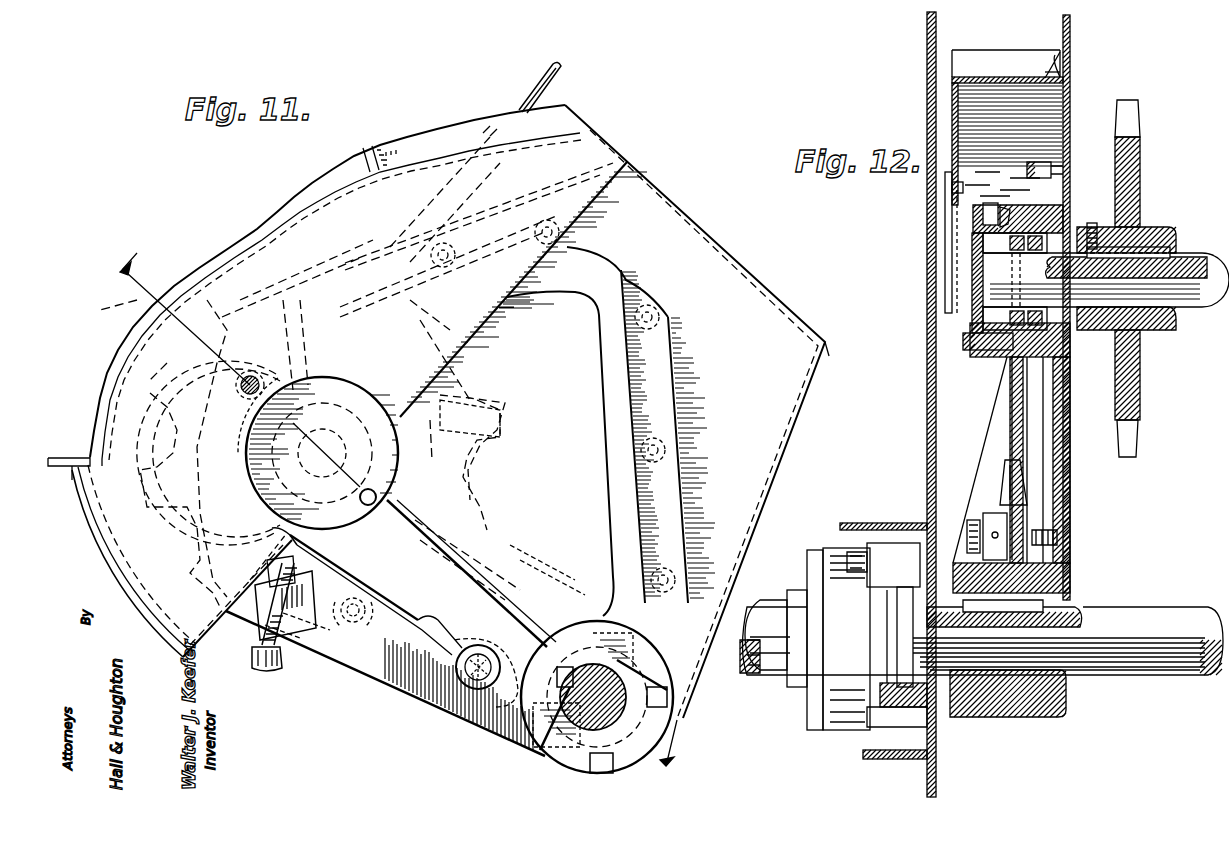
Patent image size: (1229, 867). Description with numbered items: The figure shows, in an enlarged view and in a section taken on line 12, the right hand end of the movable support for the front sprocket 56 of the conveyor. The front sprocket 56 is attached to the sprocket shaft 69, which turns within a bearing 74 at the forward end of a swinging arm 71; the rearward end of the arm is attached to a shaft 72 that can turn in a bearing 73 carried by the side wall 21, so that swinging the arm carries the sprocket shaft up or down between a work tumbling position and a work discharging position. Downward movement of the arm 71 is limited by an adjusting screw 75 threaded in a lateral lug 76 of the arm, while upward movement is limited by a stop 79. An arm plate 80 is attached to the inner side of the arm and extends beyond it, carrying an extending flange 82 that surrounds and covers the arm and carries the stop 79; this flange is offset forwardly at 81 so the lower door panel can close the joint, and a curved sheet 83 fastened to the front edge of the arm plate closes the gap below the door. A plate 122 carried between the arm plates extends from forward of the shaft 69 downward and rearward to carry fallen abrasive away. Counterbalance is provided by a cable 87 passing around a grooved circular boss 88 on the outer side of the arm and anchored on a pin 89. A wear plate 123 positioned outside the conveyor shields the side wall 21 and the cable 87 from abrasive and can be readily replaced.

In FIG. 11, the section line 12 is at (414, 506).
In FIG. 12, the side wall 21 is at (927, 408).
In FIG. 11, the front sprocket 56 is at (503, 418).
In FIG. 12, the front sprocket 56 is at (1128, 396).
In FIG. 11, the sprocket shaft 69 is at (343, 527).
In FIG. 12, the sprocket shaft 69 is at (1207, 302).
In FIG. 11, the swinging arm 71 is at (500, 558).
In FIG. 12, the swinging arm 71 is at (1012, 450).
In FIG. 11, the shaft 72 is at (630, 740).
In FIG. 12, the shaft 72 is at (1150, 612).
In FIG. 12, the bearing 73 is at (837, 555).
In FIG. 11, the bearing 74 is at (245, 437).
In FIG. 12, the bearing 74 is at (1070, 212).
In FIG. 11, the adjusting screw 75 is at (255, 672).
In FIG. 11, the lateral lug 76 is at (306, 642).
In FIG. 12, the lateral lug 76 is at (987, 436).
In FIG. 11, the stop 79 is at (376, 147).
In FIG. 12, the stop 79 is at (1018, 55).
In FIG. 11, the arm plate 80 is at (768, 302).
In FIG. 12, the arm plate 80 is at (1068, 82).
In FIG. 11, the forward offset 81 is at (88, 458).
In FIG. 11, the extending flange 82 is at (257, 238).
In FIG. 12, the extending flange 82 is at (972, 76).
In FIG. 11, the curved sheet 83 is at (120, 598).
In FIG. 11, the cable 87 is at (550, 84).
In FIG. 12, the cable 87 is at (1020, 200).
In FIG. 11, the circular boss 88 is at (246, 480).
In FIG. 12, the circular boss 88 is at (1005, 205).
In FIG. 11, the pin 89 is at (464, 683).
In FIG. 12, the pin 89 is at (972, 515).
In FIG. 11, the plate 122 is at (425, 432).
In FIG. 12, the wear plate 123 is at (1070, 35).